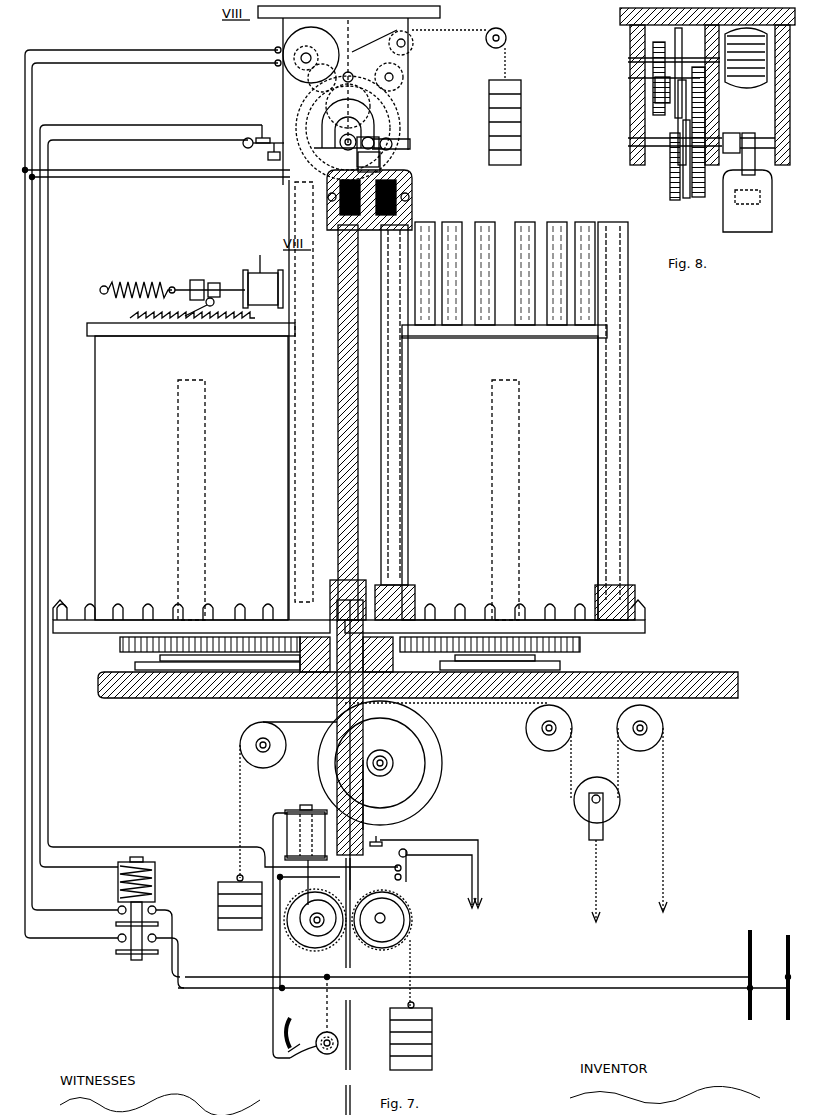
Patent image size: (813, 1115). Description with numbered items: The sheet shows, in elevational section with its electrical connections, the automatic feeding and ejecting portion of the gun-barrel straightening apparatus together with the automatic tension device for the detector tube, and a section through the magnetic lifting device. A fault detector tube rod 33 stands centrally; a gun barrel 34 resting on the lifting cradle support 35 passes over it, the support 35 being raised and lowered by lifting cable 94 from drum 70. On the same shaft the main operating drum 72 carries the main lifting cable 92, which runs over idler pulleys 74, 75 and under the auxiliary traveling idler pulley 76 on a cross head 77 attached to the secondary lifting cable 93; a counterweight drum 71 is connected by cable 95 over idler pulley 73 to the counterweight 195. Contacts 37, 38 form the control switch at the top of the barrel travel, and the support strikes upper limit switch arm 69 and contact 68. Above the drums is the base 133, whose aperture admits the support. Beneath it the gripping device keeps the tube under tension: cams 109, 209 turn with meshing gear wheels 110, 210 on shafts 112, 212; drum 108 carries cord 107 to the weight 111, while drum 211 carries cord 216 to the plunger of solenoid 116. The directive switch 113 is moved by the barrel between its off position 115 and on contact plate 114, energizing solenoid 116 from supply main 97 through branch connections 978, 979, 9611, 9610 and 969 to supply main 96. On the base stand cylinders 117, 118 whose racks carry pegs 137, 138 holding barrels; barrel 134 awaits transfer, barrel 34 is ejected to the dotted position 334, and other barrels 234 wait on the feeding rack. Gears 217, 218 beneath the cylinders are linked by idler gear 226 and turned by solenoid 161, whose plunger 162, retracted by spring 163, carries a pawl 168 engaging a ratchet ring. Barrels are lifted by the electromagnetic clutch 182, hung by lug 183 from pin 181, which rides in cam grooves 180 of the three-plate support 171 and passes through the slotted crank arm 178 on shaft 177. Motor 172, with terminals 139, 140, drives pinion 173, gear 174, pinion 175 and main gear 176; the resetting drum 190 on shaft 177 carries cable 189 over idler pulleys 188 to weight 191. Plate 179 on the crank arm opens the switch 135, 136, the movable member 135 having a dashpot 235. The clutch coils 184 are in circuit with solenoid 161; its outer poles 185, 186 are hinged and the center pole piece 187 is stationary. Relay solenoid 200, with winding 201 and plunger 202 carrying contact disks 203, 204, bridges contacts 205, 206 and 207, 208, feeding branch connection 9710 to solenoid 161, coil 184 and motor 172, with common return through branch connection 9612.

In FIG. 7, the support 171 is at (262, 16).
In FIG. 8, the support 171 is at (620, 14).
In FIG. 7, the circuit terminal 139 is at (274, 48).
In FIG. 7, the circuit terminal 140 is at (274, 65).
In FIG. 7, the pinion 173 is at (318, 40).
In FIG. 8, the pinion 173 is at (652, 52).
In FIG. 7, the motor 172 is at (330, 44).
In FIG. 8, the motor 172 is at (750, 76).
In FIG. 7, the gear 174 is at (393, 42).
In FIG. 8, the gear 174 is at (654, 90).
In FIG. 7, the cable 189 is at (440, 28).
In FIG. 8, the cable 189 is at (682, 198).
In FIG. 7, the idler pulleys 188 is at (396, 72).
In FIG. 8, the idler pulleys 188 is at (674, 36).
In FIG. 7, the pinion 175 is at (352, 74).
In FIG. 8, the pinion 175 is at (678, 90).
In FIG. 7, the resetting drum 190 is at (378, 110).
In FIG. 8, the resetting drum 190 is at (674, 182).
In FIG. 7, the main gear 176 is at (386, 118).
In FIG. 8, the main gear 176 is at (690, 120).
In FIG. 7, the cam grooves 180 is at (330, 116).
In FIG. 8, the cam grooves 180 is at (776, 118).
In FIG. 7, the slotted crank arm 178 is at (382, 134).
In FIG. 7, the shaft 177 is at (340, 148).
In FIG. 8, the shaft 177 is at (628, 144).
In FIG. 7, the pin 181 is at (382, 152).
In FIG. 8, the pin 181 is at (772, 140).
In FIG. 7, the plate 179 is at (410, 144).
In FIG. 7, the lug 183 is at (386, 164).
In FIG. 8, the lug 183 is at (748, 160).
In FIG. 7, the electromagnetic clutch 182 is at (410, 184).
In FIG. 8, the electromagnetic clutch 182 is at (728, 180).
In FIG. 7, the coils 184 is at (330, 200).
In FIG. 7, the outer pole 186 is at (409, 200).
In FIG. 7, the weight 191 is at (522, 128).
In FIG. 7, the switch member 136 is at (262, 130).
In FIG. 7, the movable switch member 135 is at (244, 140).
In FIG. 7, the dashpot 235 is at (268, 157).
In FIG. 7, the negative branch connection 9612 is at (28, 168).
In FIG. 7, the branch connection 9710 is at (35, 179).
In FIG. 7, the outer pole 185 is at (312, 232).
In FIG. 7, the center pole piece 187 is at (368, 236).
In FIG. 7, the gun barrel 34 is at (346, 478).
In FIG. 7, the gun barrel 134 is at (387, 326).
In FIG. 7, the gun barrels 234 is at (585, 222).
In FIG. 7, the cylinder 118 is at (191, 471).
In FIG. 7, the dotted-line position 334 is at (296, 402).
In FIG. 7, the cylinder 117 is at (504, 472).
In FIG. 7, the pegs 138 is at (270, 608).
In FIG. 7, the pegs 137 is at (590, 608).
In FIG. 7, the gear 218 is at (118, 648).
In FIG. 7, the gear 217 is at (582, 646).
In FIG. 7, the idler gear 226 is at (276, 660).
In FIG. 7, the base 133 is at (666, 676).
In FIG. 7, the gun barrel lifting cradle support 35 is at (337, 706).
In FIG. 7, the lifting cable 94 is at (366, 802).
In FIG. 7, the main operating drum 72 is at (426, 792).
In FIG. 7, the counterweight drum 71 is at (414, 768).
In FIG. 7, the drum 70 is at (388, 757).
In FIG. 7, the main lifting cable 92 is at (686, 836).
In FIG. 7, the idler pulley 73 is at (240, 742).
In FIG. 7, the idler pulley 74 is at (526, 732).
In FIG. 7, the idler pulley 75 is at (658, 730).
In FIG. 7, the auxiliary traveling idler pulley 76 is at (594, 786).
In FIG. 7, the cross head 77 is at (603, 830).
In FIG. 7, the secondary lifting cable 93 is at (600, 888).
In FIG. 7, the lifting cable 95 is at (242, 808).
In FIG. 7, the solenoid 116 is at (300, 812).
In FIG. 7, the contact 68 is at (384, 838).
In FIG. 7, the upper limit switch arm 69 is at (408, 856).
In FIG. 7, the contact 37 is at (402, 870).
In FIG. 7, the contact 38 is at (402, 880).
In FIG. 7, the branch connection 9611 is at (276, 876).
In FIG. 7, the solenoid relay 200 is at (160, 846).
In FIG. 7, the plunger 202 is at (128, 858).
In FIG. 7, the winding 201 is at (150, 880).
In FIG. 7, the contact 206 is at (118, 908).
In FIG. 7, the contact 205 is at (156, 908).
In FIG. 7, the contact disk 203 is at (116, 924).
In FIG. 7, the contact 207 is at (156, 934).
In FIG. 7, the contact 208 is at (118, 940).
In FIG. 7, the contact disk 204 is at (128, 954).
In FIG. 7, the counterweight 195 is at (230, 926).
In FIG. 7, the cord 216 is at (312, 886).
In FIG. 7, the shaft 212 is at (322, 904).
In FIG. 7, the cam 209 is at (300, 930).
In FIG. 7, the drum 211 is at (314, 928).
In FIG. 7, the gear wheel 210 is at (334, 940).
In FIG. 7, the gear wheel 110 is at (398, 902).
In FIG. 7, the drum 108 is at (410, 920).
In FIG. 7, the cam 109 is at (398, 930).
In FIG. 7, the shaft 112 is at (374, 906).
In FIG. 7, the cord 107 is at (412, 972).
In FIG. 7, the weight 111 is at (414, 1036).
In FIG. 7, the fault detector tube rod 33 is at (366, 1040).
In FIG. 7, the branch connection 979 is at (330, 980).
In FIG. 7, the branch connection 9610 is at (282, 992).
In FIG. 7, the directive switch 113 is at (318, 1058).
In FIG. 7, the contact plate 114 is at (288, 1056).
In FIG. 7, the off position 115 is at (286, 1024).
In FIG. 7, the negative supply main 96 is at (748, 960).
In FIG. 7, the positive supply main 97 is at (786, 960).
In FIG. 7, the branch connection 969 is at (749, 989).
In FIG. 7, the branch connection 978 is at (786, 978).
In FIG. 7, the spring 163 is at (144, 282).
In FIG. 7, the plunger 162 is at (228, 284).
In FIG. 7, the solenoid 161 is at (278, 300).
In FIG. 7, the pawl 168 is at (192, 310).